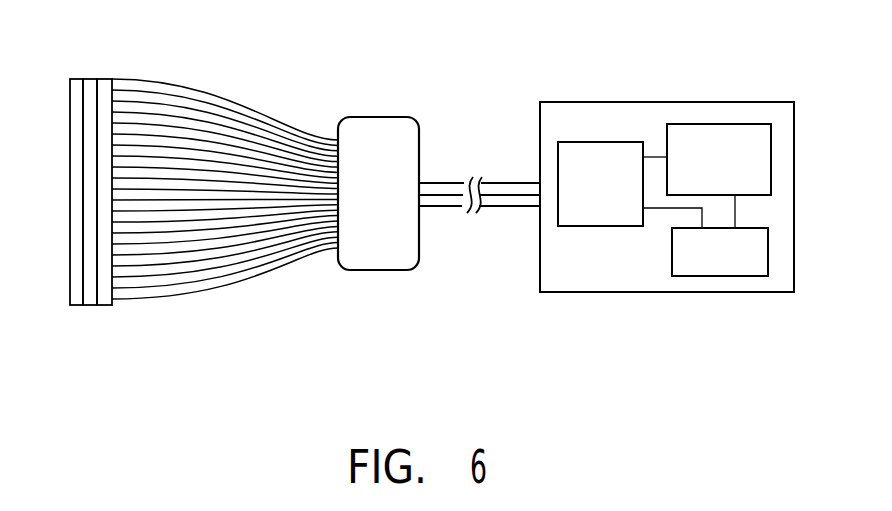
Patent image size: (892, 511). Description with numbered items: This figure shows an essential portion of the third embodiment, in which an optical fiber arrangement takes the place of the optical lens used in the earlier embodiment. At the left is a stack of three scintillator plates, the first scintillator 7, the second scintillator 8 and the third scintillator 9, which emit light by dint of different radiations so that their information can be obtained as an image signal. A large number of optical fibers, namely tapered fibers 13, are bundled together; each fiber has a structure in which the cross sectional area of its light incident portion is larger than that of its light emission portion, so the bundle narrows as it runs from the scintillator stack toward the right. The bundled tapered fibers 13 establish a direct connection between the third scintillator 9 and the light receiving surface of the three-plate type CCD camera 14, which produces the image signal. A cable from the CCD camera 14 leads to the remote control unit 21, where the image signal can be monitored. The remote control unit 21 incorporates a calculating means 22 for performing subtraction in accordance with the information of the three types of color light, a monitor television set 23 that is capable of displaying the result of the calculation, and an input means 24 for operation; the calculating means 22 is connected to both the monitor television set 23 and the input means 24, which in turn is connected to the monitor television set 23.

The first scintillator 7 is at (68, 293).
The second scintillator 8 is at (90, 79).
The third scintillator 9 is at (102, 305).
The tapered fibers 13 is at (237, 108).
The three-plate type CCD camera 14 is at (372, 270).
The remote control unit 21 is at (680, 102).
The calculating means 22 is at (600, 142).
The monitor television set 23 is at (740, 124).
The input means 24 is at (727, 276).